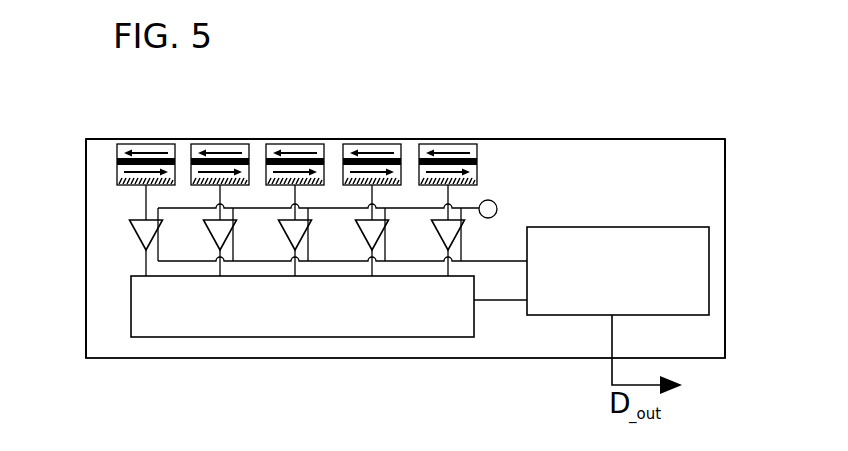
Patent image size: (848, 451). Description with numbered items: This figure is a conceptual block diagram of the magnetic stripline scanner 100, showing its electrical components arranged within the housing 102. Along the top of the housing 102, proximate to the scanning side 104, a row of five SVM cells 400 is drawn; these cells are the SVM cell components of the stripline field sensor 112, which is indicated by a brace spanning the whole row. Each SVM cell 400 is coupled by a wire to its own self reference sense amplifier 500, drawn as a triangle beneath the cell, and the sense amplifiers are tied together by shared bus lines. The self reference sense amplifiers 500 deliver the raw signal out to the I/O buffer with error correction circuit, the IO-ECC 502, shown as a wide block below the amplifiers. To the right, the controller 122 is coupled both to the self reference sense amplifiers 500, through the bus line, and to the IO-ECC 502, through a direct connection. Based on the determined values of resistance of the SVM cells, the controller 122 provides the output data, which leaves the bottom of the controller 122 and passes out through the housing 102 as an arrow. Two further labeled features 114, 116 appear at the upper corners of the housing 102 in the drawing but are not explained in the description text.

The magnetic stripline scanner 100 is at (652, 106).
The housing 102 is at (725, 306).
The scanning side 104 is at (526, 133).
The stripline field sensor 112 is at (302, 129).
The left edge of substrate 114 is at (80, 132).
The right edge of substrate 116 is at (730, 134).
The controller 122 is at (669, 226).
The SVM cell 400 is at (392, 129).
The self reference sense amplifier 500 is at (118, 228).
The I/O buffer with error correction circuit (IO-ECC) 502 is at (333, 338).